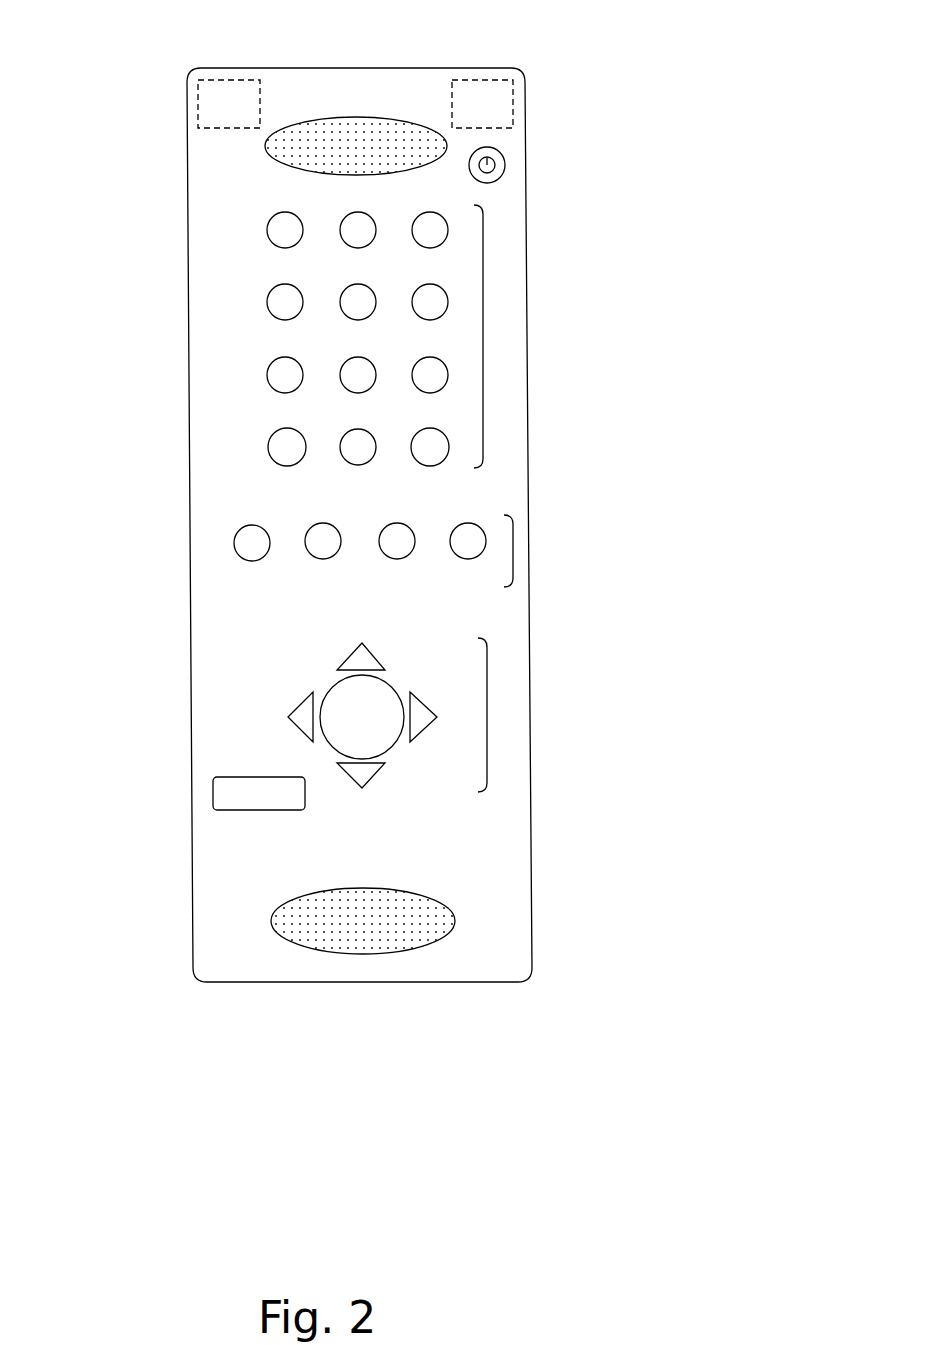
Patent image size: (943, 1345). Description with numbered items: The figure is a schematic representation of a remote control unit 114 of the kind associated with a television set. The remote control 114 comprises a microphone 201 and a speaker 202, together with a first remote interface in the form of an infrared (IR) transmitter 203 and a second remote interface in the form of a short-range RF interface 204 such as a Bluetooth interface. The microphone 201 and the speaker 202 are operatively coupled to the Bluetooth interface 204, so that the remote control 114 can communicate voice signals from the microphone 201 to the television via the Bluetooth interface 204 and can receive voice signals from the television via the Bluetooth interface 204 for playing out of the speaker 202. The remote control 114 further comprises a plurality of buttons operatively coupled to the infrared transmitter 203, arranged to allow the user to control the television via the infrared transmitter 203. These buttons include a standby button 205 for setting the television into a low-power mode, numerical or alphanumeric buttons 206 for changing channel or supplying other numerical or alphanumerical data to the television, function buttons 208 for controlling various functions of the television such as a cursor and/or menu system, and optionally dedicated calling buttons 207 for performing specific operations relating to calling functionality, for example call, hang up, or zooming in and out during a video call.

The remote control unit 114 is at (290, 525).
The microphone 201 is at (380, 895).
The speaker 202 is at (356, 98).
The infrared (IR) transmitter 203 is at (503, 68).
The short-range RF interface 204 is at (249, 68).
The standby button 205 is at (541, 160).
The numerical or alphanumeric buttons 206 is at (430, 336).
The dedicated calling buttons 207 is at (424, 551).
The function buttons 208 is at (405, 724).